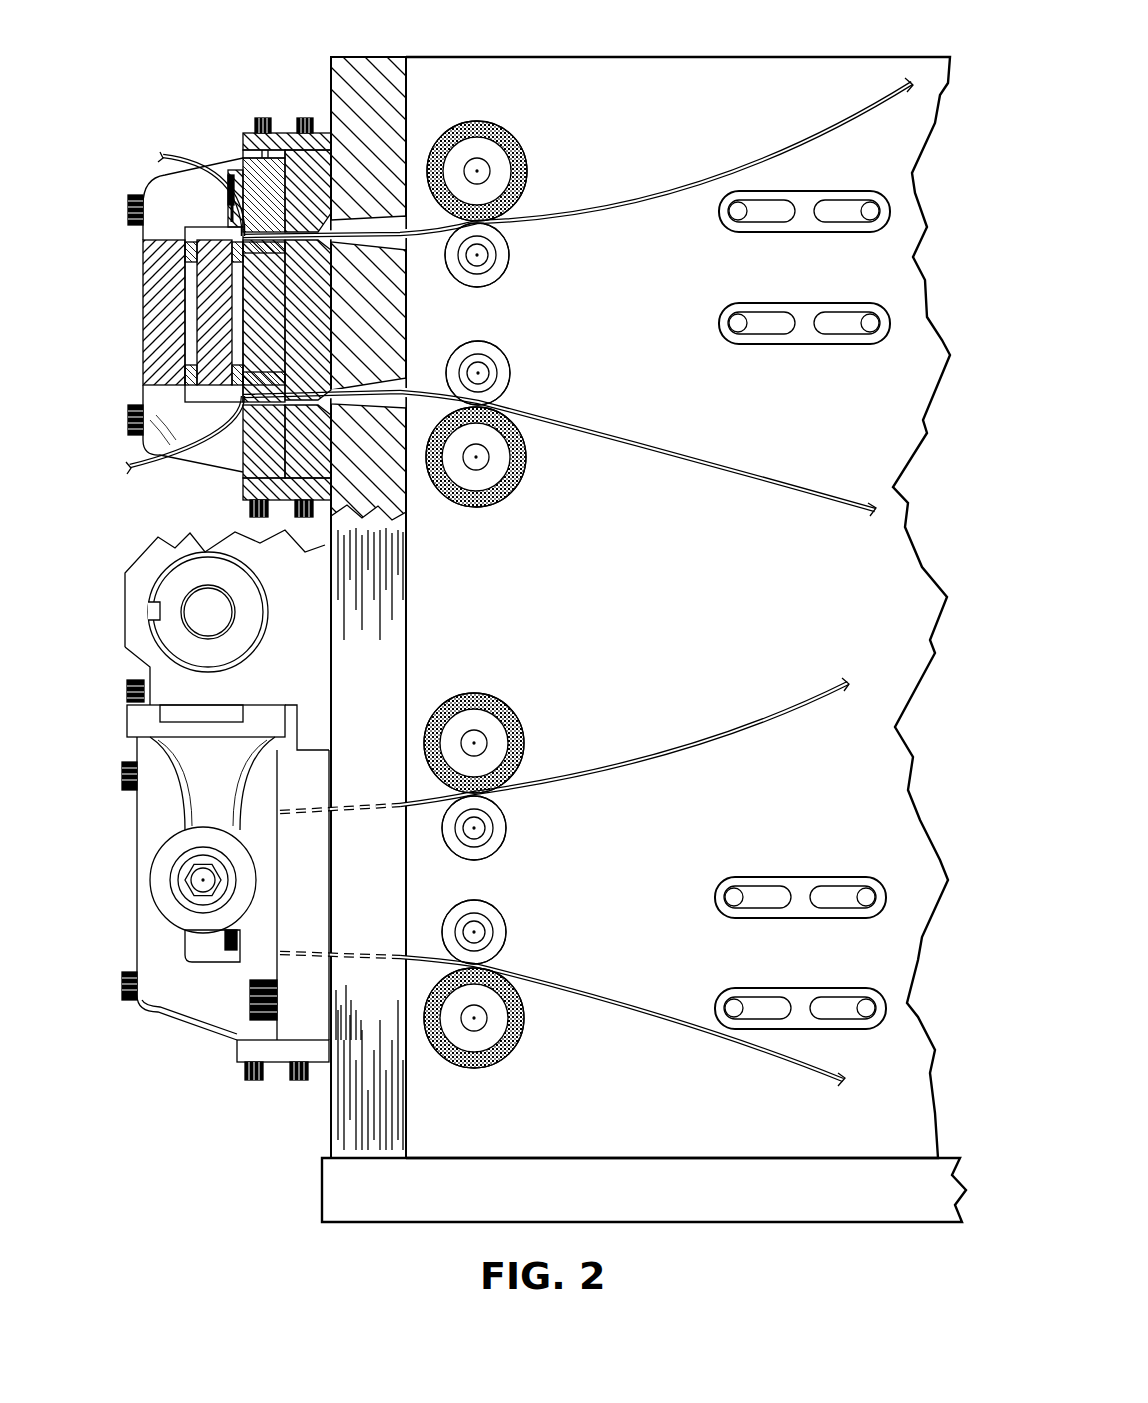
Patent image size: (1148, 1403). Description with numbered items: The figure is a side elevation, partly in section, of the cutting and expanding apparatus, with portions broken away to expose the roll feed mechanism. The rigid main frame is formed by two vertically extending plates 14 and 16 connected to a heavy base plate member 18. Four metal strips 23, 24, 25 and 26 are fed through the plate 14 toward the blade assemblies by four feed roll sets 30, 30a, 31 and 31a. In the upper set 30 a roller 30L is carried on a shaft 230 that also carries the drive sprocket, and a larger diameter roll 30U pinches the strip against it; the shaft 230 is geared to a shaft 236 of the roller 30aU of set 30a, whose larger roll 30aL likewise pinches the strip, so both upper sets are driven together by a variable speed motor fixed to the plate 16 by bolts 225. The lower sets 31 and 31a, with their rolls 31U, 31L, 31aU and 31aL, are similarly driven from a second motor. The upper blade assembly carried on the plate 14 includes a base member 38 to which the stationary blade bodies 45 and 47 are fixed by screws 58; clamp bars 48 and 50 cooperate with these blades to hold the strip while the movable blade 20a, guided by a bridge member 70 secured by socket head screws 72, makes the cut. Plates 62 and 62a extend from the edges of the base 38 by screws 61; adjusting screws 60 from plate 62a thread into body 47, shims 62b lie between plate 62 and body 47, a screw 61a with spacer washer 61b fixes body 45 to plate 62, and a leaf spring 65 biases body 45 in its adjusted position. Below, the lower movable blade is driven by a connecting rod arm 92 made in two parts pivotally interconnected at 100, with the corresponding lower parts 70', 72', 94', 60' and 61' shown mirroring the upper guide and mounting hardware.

The vertically extending plate 14 is at (370, 58).
The vertically extending plate 16 is at (660, 64).
The base plate member 18 is at (345, 1186).
The movable blade 20a is at (200, 300).
The metal strip 23 is at (628, 185).
The metal strip 24 is at (533, 414).
The metal strip 25 is at (645, 750).
The metal strip 26 is at (528, 974).
The feed roll set 30 is at (525, 213).
The larger diameter roll 30U is at (473, 122).
The roller 30L is at (504, 270).
The feed roll set 30a is at (513, 387).
The roller 30aU is at (477, 341).
The larger diameter roll 30aL is at (527, 458).
The feed roll set 31 is at (530, 766).
The feed roll 31U is at (468, 695).
The feed roll 31L is at (506, 822).
The feed roll set 31a is at (509, 946).
The feed roll 31aU is at (474, 901).
The feed roll 31aL is at (524, 1019).
The base member 38 is at (318, 155).
The blade body 45 is at (275, 208).
The blade body 47 is at (205, 459).
The clamp bar 48 is at (250, 262).
The clamp bar 50 is at (263, 368).
The screws 58 is at (232, 180).
The adjusting screws 60 is at (250, 524).
The bolt 60' is at (233, 1089).
The screws 61 is at (293, 313).
The bolt 61' is at (288, 1090).
The screw 61a is at (263, 118).
The spacer washer 61b is at (255, 150).
The plate 62 is at (238, 170).
The plate 62a is at (245, 500).
The shims 62b is at (243, 486).
The leaf spring 65 is at (235, 178).
The bridge member 70 is at (170, 308).
The housing 70' is at (203, 796).
The socket head machine screws 72 is at (110, 315).
The screw 72' is at (106, 872).
The connecting rod arm 92 is at (200, 784).
The hub nut 94' is at (172, 880).
The pivotal interconnection 100 is at (165, 712).
The bolts 225 is at (740, 206).
The shaft 230 is at (486, 254).
The shaft 236 is at (473, 374).